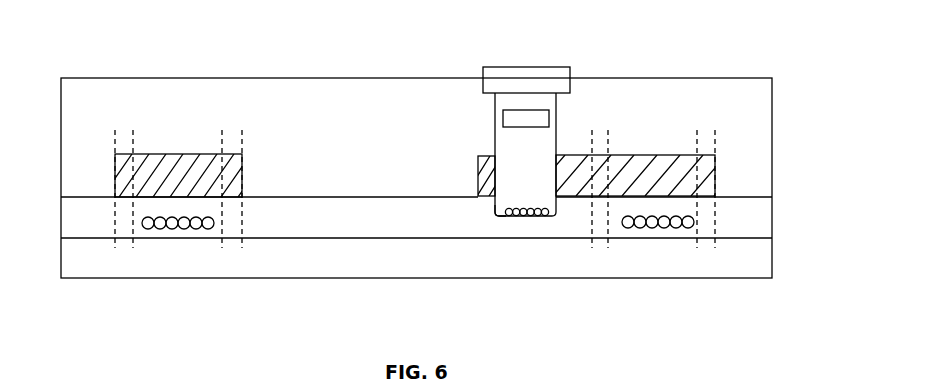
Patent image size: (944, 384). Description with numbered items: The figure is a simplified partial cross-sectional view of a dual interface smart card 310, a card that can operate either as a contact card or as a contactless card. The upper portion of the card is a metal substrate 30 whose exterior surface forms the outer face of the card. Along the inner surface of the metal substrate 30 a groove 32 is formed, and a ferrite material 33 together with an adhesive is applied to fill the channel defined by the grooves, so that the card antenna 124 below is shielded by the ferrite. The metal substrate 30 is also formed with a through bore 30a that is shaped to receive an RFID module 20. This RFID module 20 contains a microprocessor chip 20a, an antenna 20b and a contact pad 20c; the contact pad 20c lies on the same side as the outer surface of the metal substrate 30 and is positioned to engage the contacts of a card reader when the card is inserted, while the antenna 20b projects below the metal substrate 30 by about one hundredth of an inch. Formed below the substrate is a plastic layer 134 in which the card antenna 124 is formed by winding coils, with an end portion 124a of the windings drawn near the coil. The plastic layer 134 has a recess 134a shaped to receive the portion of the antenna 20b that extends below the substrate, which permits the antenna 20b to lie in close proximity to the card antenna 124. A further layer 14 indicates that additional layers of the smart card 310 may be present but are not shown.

The dual interface smart card 310 is at (78, 65).
The metal substrate 30 is at (807, 133).
The through bore 30a is at (478, 188).
The RFID module 20 is at (535, 158).
The microprocessor chip 20a is at (503, 118).
The antenna 20b is at (524, 218).
The contact pad 20c is at (507, 67).
The groove 32 is at (657, 155).
The ferrite material 33 is at (600, 155).
The card antenna 124 is at (133, 220).
The coil end portion 124a is at (220, 220).
The plastic layer 134 is at (772, 212).
The recess 134a is at (506, 218).
The layer 14 is at (772, 264).